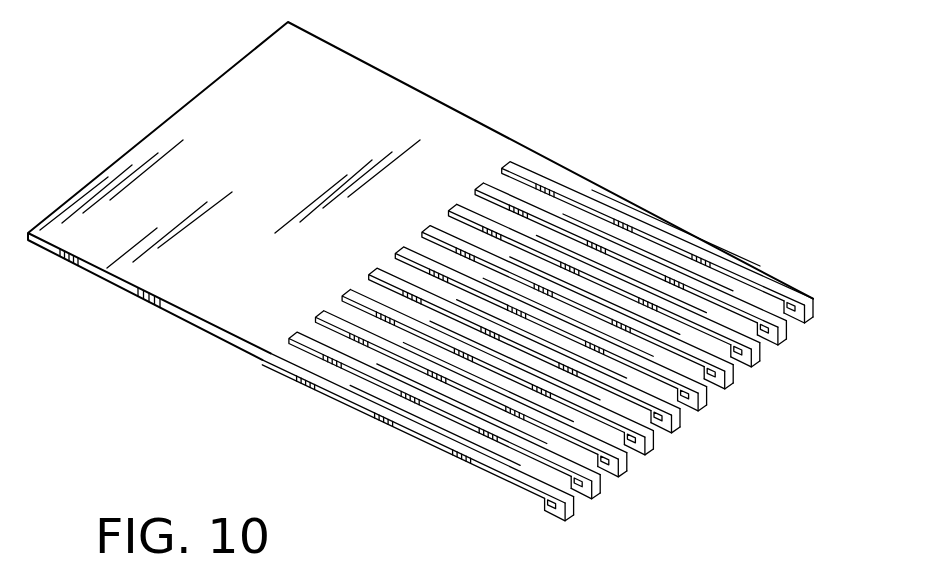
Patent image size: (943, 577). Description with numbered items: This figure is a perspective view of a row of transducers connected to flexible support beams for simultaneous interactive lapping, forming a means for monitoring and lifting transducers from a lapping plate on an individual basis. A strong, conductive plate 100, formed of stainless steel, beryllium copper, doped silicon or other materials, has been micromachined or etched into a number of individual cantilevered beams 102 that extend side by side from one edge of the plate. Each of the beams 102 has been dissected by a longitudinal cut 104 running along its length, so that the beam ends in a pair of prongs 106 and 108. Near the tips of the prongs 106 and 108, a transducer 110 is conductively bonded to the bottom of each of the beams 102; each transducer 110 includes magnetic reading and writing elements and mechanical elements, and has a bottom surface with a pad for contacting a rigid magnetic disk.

The conductive plate 100 is at (172, 320).
The cantilevered beams 102 is at (553, 172).
The longitudinal cut 104 is at (665, 217).
The prong 106 is at (763, 350).
The prong 108 is at (777, 327).
The transducer 110 is at (573, 513).